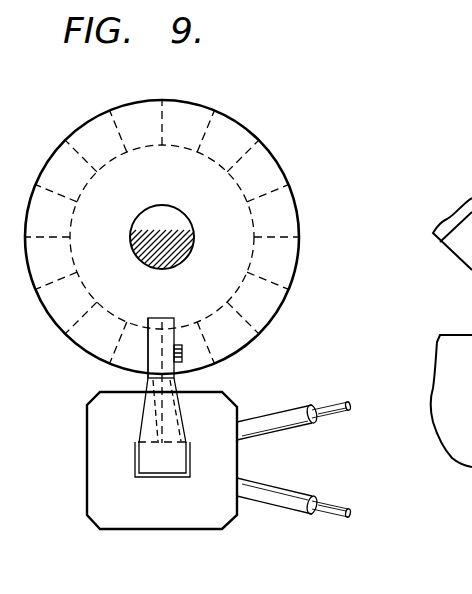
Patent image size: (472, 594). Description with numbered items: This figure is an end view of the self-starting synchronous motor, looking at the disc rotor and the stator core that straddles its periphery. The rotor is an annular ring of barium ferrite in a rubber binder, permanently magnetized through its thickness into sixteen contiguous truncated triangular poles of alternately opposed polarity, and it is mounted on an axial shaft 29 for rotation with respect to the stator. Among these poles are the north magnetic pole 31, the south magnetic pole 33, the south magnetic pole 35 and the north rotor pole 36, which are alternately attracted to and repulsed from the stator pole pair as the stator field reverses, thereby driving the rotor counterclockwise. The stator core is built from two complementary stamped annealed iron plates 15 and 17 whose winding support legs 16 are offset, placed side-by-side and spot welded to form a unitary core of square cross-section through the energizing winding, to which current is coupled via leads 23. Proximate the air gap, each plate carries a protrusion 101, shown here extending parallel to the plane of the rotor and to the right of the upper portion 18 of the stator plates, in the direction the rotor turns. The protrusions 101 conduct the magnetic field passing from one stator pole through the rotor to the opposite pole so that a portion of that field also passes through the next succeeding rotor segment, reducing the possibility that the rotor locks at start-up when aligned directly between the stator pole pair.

The annealed iron plate 15 is at (142, 409).
The winding support legs 16 is at (176, 478).
The annealed iron plate 17 is at (182, 425).
The upper portion of the stator plates 18 is at (168, 318).
The leads 23 is at (332, 494).
The axial shaft 29 is at (196, 240).
The north magnetic pole 31 is at (150, 319).
The south magnetic pole 33 is at (195, 375).
The south magnetic pole 35 is at (113, 313).
The north rotor pole 36 is at (57, 330).
The protrusion 101 is at (178, 346).